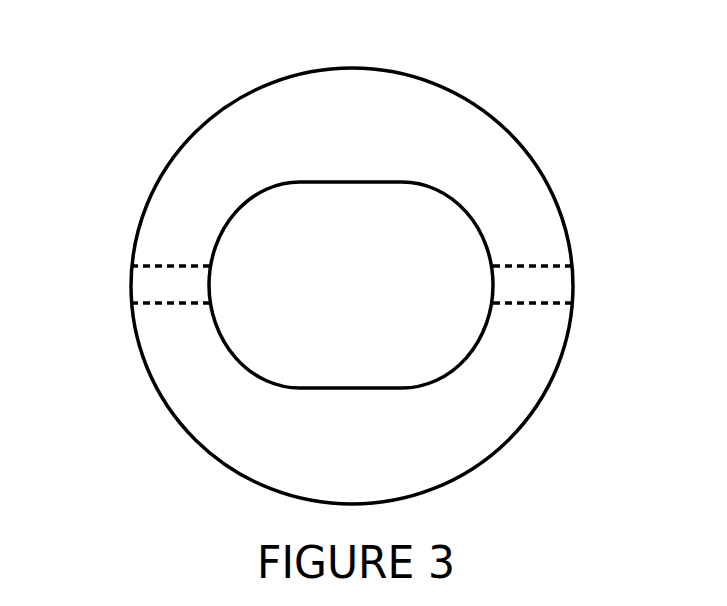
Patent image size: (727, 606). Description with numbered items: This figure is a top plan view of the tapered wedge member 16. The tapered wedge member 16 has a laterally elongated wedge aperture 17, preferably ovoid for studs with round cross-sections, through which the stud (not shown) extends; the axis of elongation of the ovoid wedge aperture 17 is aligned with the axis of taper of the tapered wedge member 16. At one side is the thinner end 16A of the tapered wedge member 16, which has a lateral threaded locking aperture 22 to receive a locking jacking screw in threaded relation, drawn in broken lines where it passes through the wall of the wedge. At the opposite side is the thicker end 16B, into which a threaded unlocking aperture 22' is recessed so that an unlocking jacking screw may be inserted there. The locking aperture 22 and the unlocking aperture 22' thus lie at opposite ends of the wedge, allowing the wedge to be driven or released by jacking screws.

The tapered wedge member 16 is at (172, 128).
The thinner end 16A is at (168, 257).
The thicker end 16B is at (525, 243).
The wedge aperture 17 is at (358, 258).
The threaded locking aperture 22 is at (117, 333).
The threaded unlocking aperture 22' is at (583, 251).